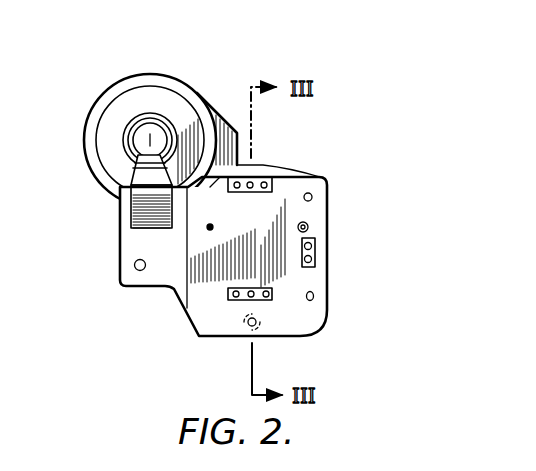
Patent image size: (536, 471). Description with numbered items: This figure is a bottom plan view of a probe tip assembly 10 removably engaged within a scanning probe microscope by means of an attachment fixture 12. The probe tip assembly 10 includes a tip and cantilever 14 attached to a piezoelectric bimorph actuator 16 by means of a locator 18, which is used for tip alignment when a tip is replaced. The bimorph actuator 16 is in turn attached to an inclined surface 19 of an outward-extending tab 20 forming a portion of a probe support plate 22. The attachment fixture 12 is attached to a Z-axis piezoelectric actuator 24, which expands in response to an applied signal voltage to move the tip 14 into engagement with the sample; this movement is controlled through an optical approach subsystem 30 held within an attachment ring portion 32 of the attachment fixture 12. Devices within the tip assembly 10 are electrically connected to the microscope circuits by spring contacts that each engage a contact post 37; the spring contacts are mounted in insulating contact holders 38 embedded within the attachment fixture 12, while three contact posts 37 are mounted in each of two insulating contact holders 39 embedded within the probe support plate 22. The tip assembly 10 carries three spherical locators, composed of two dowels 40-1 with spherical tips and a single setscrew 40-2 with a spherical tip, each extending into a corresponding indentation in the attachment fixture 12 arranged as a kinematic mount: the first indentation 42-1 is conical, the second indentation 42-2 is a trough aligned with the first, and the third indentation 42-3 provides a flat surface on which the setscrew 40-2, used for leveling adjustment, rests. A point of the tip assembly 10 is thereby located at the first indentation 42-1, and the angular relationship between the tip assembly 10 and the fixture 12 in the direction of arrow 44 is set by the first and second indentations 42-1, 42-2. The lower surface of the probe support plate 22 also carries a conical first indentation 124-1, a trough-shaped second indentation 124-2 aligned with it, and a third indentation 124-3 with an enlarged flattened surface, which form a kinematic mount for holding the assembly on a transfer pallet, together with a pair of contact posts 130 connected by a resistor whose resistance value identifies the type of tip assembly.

The probe tip assembly 10 is at (96, 247).
The attachment fixture 12 is at (164, 324).
The tip and cantilever 14 is at (152, 142).
The piezoelectric bimorph actuator 16 is at (132, 212).
The locator 18 is at (142, 158).
The inclined surface 19 is at (153, 254).
The outward-extending tab 20 is at (125, 288).
The probe support plate 22 is at (190, 334).
The Z-axis piezoelectric actuator 24 is at (266, 166).
The optical approach subsystem 30 is at (162, 86).
The attachment ring portion 32 is at (91, 112).
The contact post 37 is at (321, 177).
The insulating contact holder 38 is at (235, 301).
The insulating contact holder 39 is at (258, 176).
The dowel 40-1 is at (306, 223).
The setscrew 40-2 is at (256, 327).
The first indentation 42-1 is at (207, 232).
The second indentation 42-2 is at (312, 231).
The third indentation 42-3 is at (258, 320).
The arrow 44 is at (140, 396).
The first indentation 124-1 is at (312, 195).
The second indentation 124-2 is at (316, 296).
The third indentation 124-3 is at (134, 268).
The contact post 130 is at (316, 249).